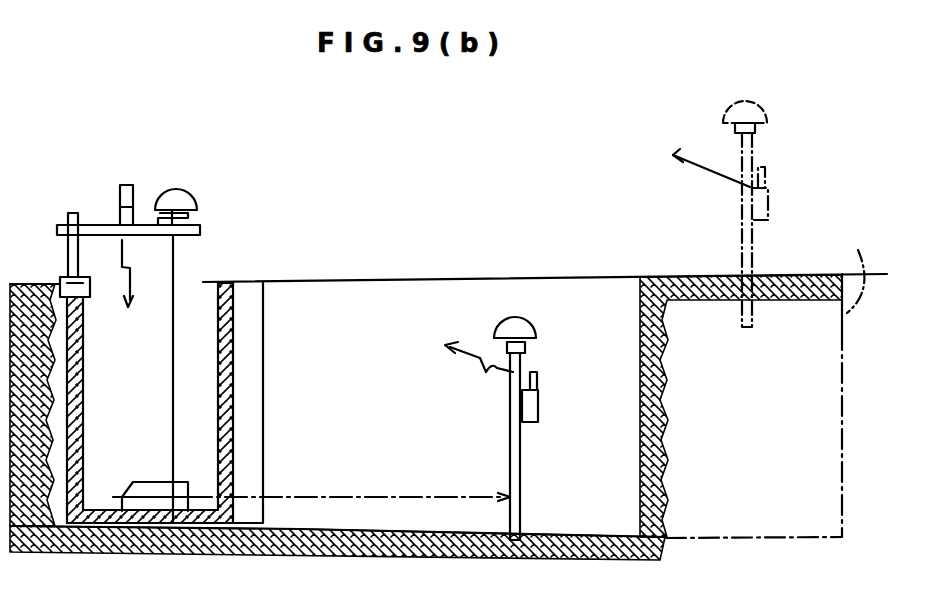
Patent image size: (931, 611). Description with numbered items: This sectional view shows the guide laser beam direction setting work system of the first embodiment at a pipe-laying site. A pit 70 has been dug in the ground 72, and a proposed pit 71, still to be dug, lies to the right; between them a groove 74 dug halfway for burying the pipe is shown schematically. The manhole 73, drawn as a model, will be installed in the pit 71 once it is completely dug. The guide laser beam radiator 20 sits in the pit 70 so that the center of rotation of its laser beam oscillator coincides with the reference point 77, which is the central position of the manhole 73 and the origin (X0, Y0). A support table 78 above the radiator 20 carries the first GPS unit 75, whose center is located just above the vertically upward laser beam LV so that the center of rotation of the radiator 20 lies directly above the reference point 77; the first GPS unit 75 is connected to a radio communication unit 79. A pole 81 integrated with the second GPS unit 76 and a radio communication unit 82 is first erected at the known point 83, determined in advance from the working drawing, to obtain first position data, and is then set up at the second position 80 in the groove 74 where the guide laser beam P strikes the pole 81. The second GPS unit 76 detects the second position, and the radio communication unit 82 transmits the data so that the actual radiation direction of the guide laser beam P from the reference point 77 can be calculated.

The guide laser beam radiator 20 is at (152, 488).
The pit 70 is at (197, 297).
The proposed pit 71 is at (865, 268).
The ground 72 is at (887, 364).
The manhole 73 is at (233, 323).
The groove 74 is at (418, 297).
The first GPS unit 75 is at (182, 200).
The second GPS unit 76 is at (527, 327).
The reference point 77 is at (205, 561).
The support table 78 is at (97, 218).
The radio communication unit 79 is at (133, 207).
The second position 80 is at (523, 542).
The pole 81 is at (522, 446).
The radio communication unit 82 is at (540, 400).
The known point 83 is at (753, 273).
The laser beam directed vertically upward LV is at (173, 362).
The guide laser beam P is at (378, 493).